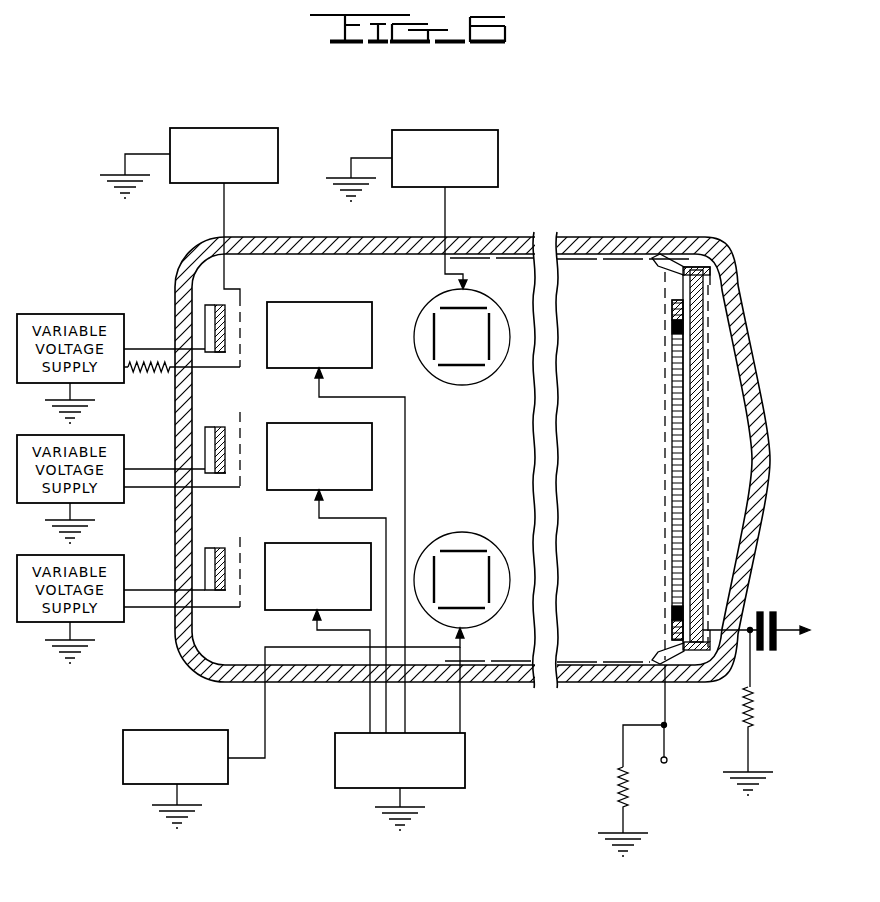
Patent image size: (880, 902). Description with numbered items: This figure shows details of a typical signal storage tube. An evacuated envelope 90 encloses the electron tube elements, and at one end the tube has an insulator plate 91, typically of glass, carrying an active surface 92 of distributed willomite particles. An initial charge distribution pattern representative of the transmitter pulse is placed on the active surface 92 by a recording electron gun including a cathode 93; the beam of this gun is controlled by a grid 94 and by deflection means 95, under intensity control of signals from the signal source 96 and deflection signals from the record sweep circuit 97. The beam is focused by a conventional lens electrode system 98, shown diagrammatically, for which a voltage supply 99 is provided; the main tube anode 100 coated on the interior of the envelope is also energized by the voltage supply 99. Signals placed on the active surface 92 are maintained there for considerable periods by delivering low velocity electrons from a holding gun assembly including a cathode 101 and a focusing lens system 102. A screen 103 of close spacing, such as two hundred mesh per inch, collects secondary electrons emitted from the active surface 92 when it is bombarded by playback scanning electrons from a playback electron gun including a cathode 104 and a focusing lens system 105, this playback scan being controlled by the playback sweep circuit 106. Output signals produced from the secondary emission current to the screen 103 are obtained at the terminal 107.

The evacuated envelope 90 is at (610, 682).
The insulator plate 91 is at (693, 268).
The active surface 92 is at (683, 400).
The cathode 93 is at (218, 312).
The grid 94 is at (240, 294).
The deflection means 95 is at (500, 318).
The signal source 96 is at (204, 128).
The record sweep circuit 97 is at (422, 130).
The lens electrode system 98 is at (341, 302).
The voltage supply 99 is at (366, 733).
The main tube anode 100 is at (487, 663).
The cathode 101 is at (218, 435).
The focusing lens system 102 is at (334, 423).
The screen 103 is at (665, 510).
The cathode 104 is at (218, 555).
The focusing lens system 105 is at (334, 543).
The playback sweep circuit 106 is at (160, 730).
The terminal 107 is at (668, 762).